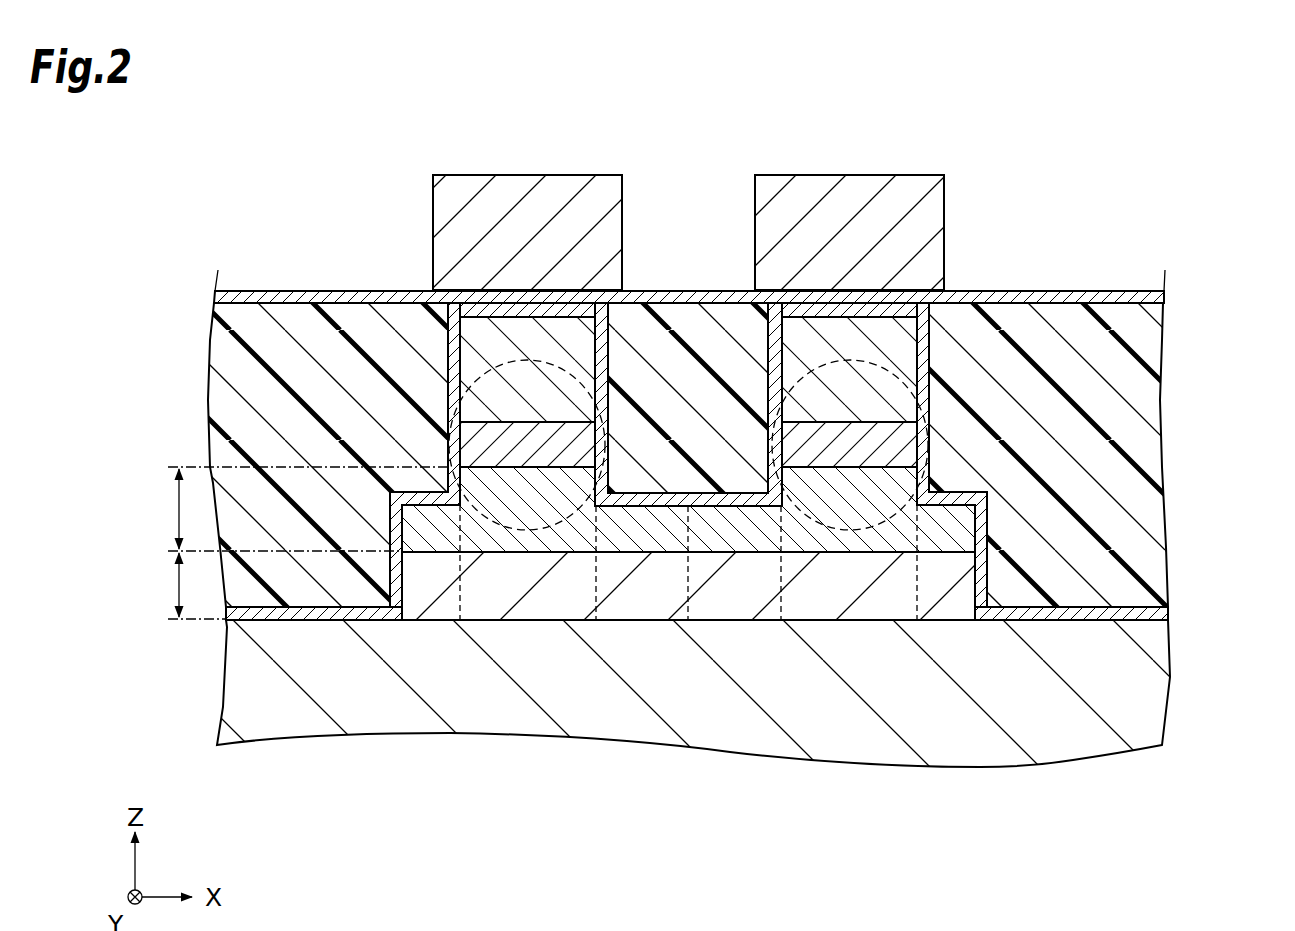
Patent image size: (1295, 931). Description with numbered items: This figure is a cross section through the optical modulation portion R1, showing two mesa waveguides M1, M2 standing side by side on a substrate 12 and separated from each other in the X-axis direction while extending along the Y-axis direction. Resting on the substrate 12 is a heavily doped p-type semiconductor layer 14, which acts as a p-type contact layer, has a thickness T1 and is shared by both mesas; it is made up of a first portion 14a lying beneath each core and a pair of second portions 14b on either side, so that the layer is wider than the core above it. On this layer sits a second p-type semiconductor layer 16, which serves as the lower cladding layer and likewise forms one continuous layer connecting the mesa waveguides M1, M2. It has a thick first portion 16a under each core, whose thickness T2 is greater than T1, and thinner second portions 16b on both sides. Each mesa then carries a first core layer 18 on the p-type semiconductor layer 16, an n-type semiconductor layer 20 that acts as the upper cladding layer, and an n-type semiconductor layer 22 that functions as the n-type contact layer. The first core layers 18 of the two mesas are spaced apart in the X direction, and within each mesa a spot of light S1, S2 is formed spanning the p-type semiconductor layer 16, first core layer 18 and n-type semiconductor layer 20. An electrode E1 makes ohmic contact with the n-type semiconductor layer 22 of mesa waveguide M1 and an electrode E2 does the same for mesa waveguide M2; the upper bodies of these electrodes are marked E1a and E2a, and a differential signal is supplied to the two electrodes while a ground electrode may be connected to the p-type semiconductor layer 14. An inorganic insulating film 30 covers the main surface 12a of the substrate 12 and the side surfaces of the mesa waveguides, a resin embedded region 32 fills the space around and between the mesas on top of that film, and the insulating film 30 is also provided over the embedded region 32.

The substrate 12 is at (1075, 727).
The main surface 12a is at (1137, 613).
The p-type semiconductor layer 14 is at (620, 813).
The first portion 14a is at (524, 590).
The second portions 14b is at (432, 595).
The p-type semiconductor layer 16 is at (130, 345).
The first portion 16a is at (510, 538).
The second portions 16b is at (640, 528).
The first core layer 18 is at (483, 447).
The n-type semiconductor layer 20 is at (483, 347).
The n-type semiconductor layer 22 is at (498, 292).
The insulating film 30 is at (282, 300).
The embedded region 32 is at (313, 345).
The electrode E1 is at (525, 303).
The first electrode upper portion E1a is at (592, 210).
The electrode E2 is at (848, 303).
The second electrode upper portion E2a is at (915, 210).
The mesa waveguide M1 is at (438, 387).
The mesa waveguide M2 is at (940, 390).
The spot of light S1 is at (590, 340).
The spot of light S2 is at (787, 340).
The optical modulation portion R1 is at (1160, 163).
The thickness T1 is at (174, 587).
The thickness T2 is at (174, 507).